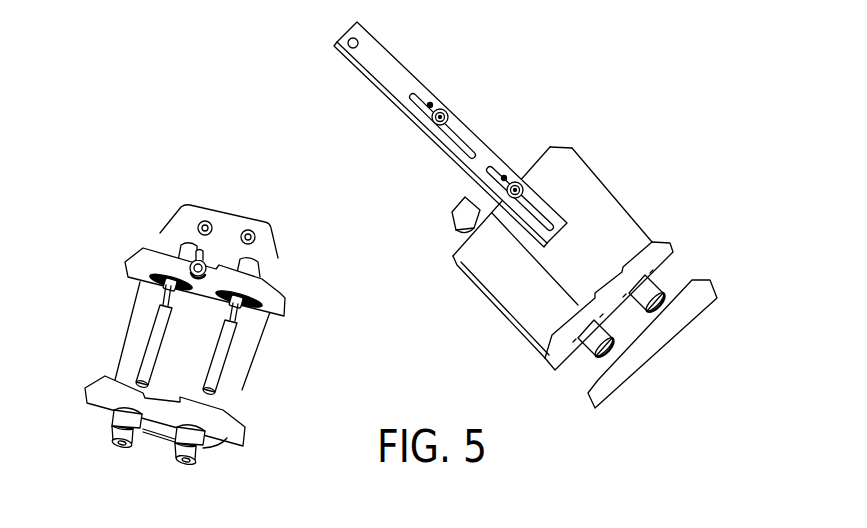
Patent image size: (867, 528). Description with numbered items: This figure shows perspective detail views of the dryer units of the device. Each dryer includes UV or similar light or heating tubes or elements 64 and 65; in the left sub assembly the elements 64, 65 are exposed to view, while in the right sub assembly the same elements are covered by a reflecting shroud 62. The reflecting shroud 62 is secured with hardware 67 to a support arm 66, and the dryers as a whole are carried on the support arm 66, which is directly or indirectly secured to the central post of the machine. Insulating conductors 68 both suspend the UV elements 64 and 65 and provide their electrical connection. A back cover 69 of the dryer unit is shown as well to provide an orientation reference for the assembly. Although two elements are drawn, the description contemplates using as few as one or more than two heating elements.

The reflecting shroud 62 is at (600, 188).
The UV light or heating element 64 is at (228, 350).
The UV light or heating element 65 is at (147, 341).
The support arm 66 is at (365, 78).
The hardware 67 is at (503, 177).
The insulating conductor 68 is at (172, 247).
The back cover 69 is at (673, 335).